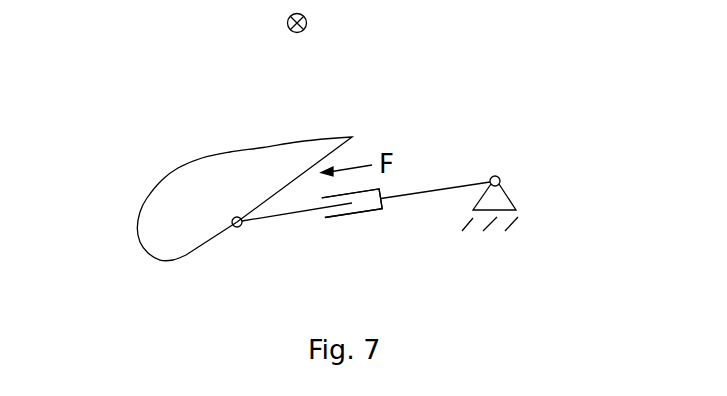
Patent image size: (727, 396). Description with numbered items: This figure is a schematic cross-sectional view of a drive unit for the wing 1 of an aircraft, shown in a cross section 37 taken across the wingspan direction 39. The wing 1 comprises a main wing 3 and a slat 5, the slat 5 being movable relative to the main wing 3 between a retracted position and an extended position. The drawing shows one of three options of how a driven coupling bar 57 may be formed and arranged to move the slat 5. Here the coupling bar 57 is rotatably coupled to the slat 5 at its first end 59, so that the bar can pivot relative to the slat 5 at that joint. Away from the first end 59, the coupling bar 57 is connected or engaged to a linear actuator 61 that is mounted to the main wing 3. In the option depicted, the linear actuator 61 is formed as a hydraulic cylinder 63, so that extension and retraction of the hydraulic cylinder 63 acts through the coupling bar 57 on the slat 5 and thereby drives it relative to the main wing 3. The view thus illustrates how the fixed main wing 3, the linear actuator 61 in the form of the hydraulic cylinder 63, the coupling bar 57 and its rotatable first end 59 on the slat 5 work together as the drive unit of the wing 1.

The wing 1 is at (220, 76).
The cross section 37 is at (105, 114).
The wingspan direction 39 is at (306, 22).
The slat 5 is at (197, 213).
The main wing 3 is at (572, 181).
The coupling bar 57 is at (298, 216).
The first end 59 is at (238, 227).
The linear actuator 61 is at (358, 215).
The hydraulic cylinder 63 is at (358, 215).